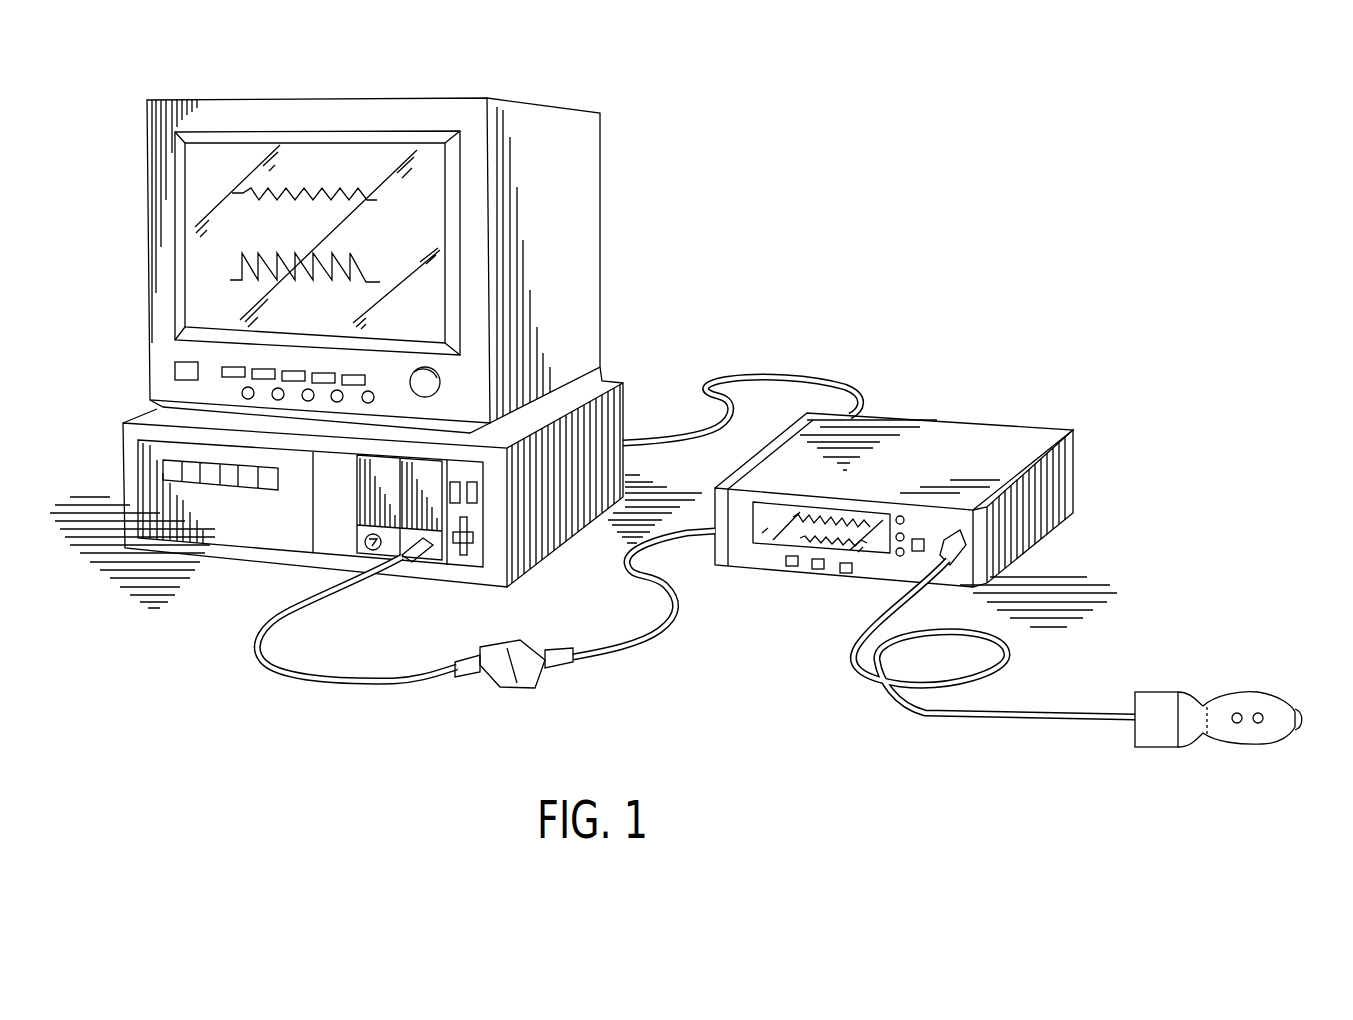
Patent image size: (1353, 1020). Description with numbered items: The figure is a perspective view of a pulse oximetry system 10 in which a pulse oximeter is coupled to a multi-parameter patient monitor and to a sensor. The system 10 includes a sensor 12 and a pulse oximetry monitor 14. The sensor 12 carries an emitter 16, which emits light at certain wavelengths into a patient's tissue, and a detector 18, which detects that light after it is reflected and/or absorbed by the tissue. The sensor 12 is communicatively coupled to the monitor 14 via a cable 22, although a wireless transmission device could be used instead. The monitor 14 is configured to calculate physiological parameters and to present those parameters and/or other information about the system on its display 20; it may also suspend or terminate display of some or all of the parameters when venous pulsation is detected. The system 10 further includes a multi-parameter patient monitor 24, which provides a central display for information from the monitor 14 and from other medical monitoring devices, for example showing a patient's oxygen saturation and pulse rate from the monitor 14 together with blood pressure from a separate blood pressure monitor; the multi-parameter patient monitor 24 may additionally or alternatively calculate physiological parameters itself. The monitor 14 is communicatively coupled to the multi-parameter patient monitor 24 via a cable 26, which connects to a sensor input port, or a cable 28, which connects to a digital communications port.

The pulse oximetry system 10 is at (701, 426).
The sensor 12 is at (1244, 706).
The pulse oximetry monitor 14 is at (894, 496).
The emitter 16 is at (1237, 724).
The detector 18 is at (1258, 724).
The display 20 is at (782, 540).
The cable 22 is at (885, 702).
The multi-parameter patient monitor 24 is at (548, 110).
The cable 26 is at (618, 658).
The cable 28 is at (793, 378).